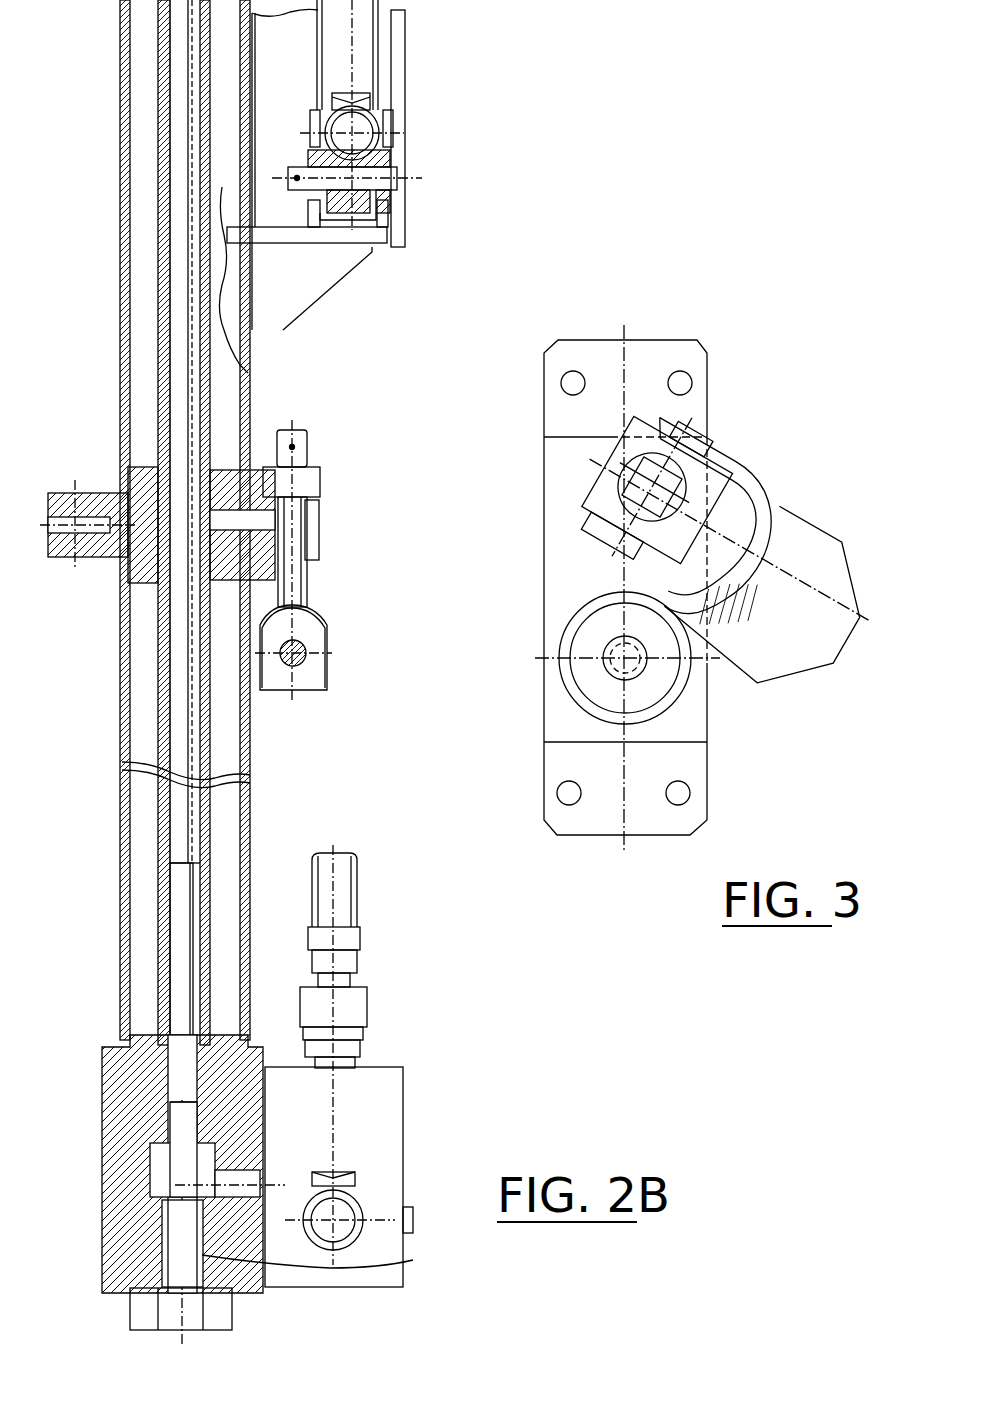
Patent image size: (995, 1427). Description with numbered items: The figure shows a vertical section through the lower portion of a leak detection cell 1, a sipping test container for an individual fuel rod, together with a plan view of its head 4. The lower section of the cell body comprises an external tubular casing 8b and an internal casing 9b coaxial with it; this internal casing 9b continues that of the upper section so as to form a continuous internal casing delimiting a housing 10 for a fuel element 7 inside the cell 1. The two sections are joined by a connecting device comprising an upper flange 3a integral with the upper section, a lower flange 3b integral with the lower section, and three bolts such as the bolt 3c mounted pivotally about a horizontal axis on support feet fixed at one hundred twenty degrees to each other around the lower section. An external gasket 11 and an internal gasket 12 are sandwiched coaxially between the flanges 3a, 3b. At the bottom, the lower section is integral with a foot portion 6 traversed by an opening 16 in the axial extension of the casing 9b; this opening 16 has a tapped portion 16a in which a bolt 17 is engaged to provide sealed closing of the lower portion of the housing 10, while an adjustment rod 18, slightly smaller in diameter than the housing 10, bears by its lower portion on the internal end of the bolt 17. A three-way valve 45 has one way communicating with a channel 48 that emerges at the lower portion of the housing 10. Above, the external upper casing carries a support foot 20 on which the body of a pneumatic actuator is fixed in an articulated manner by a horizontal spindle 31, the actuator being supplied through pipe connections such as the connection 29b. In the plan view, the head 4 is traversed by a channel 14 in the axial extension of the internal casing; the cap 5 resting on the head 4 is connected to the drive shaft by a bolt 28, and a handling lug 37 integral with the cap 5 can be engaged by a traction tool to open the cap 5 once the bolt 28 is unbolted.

In FIG. 2B, the leak detection cell 1 is at (95, 170).
In FIG. 2B, the upper flange 3a is at (250, 442).
In FIG. 2B, the lower flange 3b is at (140, 585).
In FIG. 2B, the bolt 3c is at (302, 578).
In FIG. 3, the head 4 is at (575, 538).
In FIG. 3, the cap 5 is at (765, 446).
In FIG. 2B, the foot portion 6 is at (118, 1080).
In FIG. 2B, the fuel element 7 is at (190, 750).
In FIG. 2B, the external tubular casing 8b is at (126, 790).
In FIG. 2B, the internal casing 9b is at (160, 842).
In FIG. 2B, the housing 10 is at (196, 408).
In FIG. 2B, the external gasket 11 is at (102, 540).
In FIG. 2B, the internal gasket 12 is at (282, 515).
In FIG. 3, the channel 14 is at (618, 658).
In FIG. 2B, the opening 16 is at (165, 1125).
In FIG. 2B, the tapped portion 16a is at (413, 1260).
In FIG. 2B, the bolt 17 is at (165, 1236).
In FIG. 2B, the adjustment rod 18 is at (190, 893).
In FIG. 2B, the support foot 20 is at (330, 265).
In FIG. 3, the bolt 28 is at (611, 463).
In FIG. 2B, the connection 29b is at (372, 138).
In FIG. 2B, the horizontal spindle 31 is at (392, 185).
In FIG. 3, the handling lug 37 is at (739, 439).
In FIG. 2B, the three-way valve 45 is at (372, 1135).
In FIG. 2B, the channel 48 is at (235, 1178).